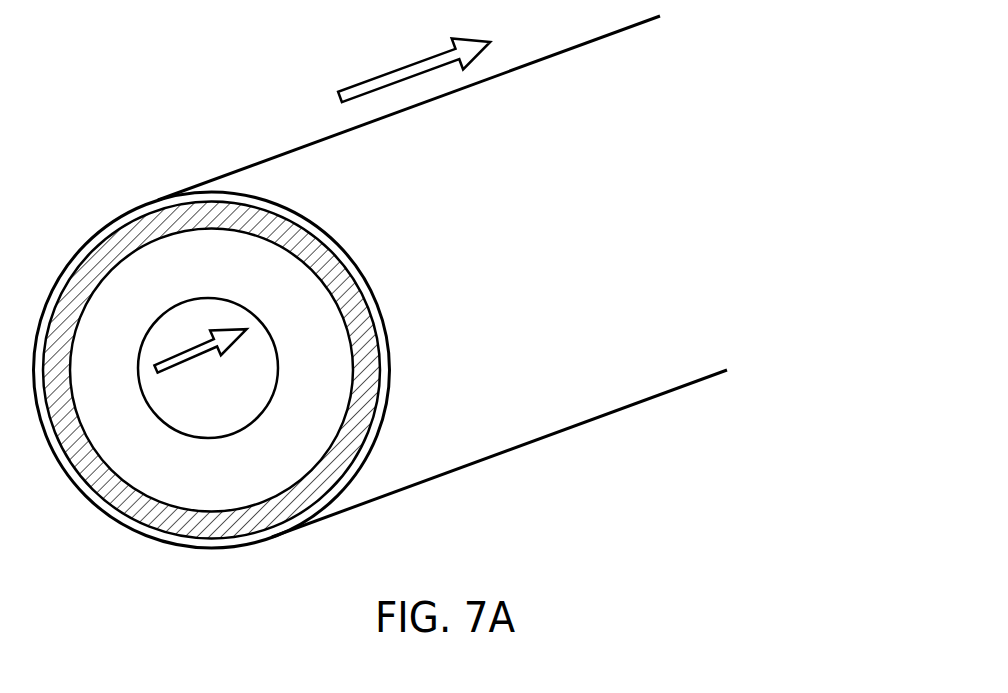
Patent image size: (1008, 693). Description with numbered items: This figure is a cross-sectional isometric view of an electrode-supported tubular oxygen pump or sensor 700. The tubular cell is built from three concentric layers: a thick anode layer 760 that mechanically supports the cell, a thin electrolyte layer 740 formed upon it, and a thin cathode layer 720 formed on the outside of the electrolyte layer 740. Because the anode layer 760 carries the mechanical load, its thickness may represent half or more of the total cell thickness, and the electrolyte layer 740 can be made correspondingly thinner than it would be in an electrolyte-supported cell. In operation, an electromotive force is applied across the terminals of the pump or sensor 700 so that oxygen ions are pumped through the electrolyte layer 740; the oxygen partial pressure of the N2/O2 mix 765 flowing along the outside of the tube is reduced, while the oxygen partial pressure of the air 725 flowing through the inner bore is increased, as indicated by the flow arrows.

The tubular oxygen pump or sensor 700 is at (543, 460).
The cathode layer 720 is at (147, 533).
The electrolyte layer 740 is at (333, 462).
The anode layer 760 is at (205, 457).
The air 725 is at (227, 423).
The N2/O2 mix 765 is at (285, 144).